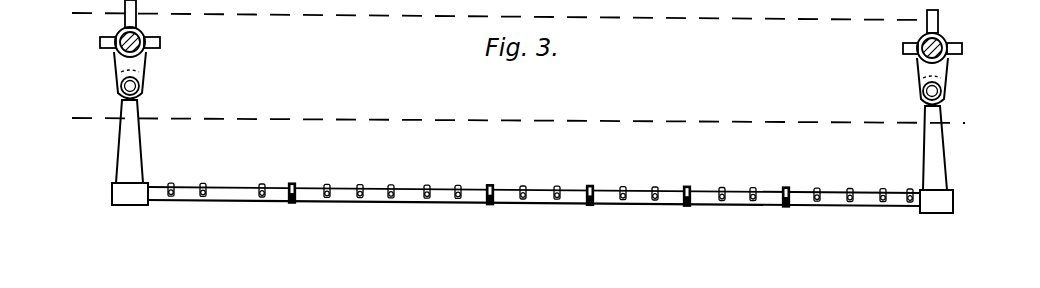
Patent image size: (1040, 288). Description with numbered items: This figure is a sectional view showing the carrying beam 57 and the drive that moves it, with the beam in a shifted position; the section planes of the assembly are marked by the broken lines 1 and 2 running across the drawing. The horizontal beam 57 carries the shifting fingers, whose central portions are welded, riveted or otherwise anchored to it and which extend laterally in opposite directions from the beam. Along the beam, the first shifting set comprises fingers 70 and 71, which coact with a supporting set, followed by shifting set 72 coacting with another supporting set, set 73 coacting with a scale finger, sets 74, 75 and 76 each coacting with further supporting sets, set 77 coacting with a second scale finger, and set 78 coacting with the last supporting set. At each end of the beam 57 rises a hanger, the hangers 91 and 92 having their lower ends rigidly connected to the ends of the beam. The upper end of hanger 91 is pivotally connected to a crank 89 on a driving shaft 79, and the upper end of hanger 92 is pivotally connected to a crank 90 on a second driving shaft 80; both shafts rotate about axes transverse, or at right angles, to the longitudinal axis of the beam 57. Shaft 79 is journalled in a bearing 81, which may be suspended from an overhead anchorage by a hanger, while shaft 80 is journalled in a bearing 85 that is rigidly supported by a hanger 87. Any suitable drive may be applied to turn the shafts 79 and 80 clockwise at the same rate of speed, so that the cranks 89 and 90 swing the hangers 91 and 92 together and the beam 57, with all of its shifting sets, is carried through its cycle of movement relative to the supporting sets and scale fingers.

The line 1— 1 is at (516, 120).
The line 2— 2 is at (517, 15).
The beam 57 is at (347, 203).
The shifting finger 70 is at (171, 200).
The shifting finger 71 is at (203, 200).
The shifting set 72 is at (292, 203).
The shifting set 73 is at (391, 201).
The shifting set 74 is at (490, 204).
The shifting set 75 is at (590, 205).
The shifting set 76 is at (687, 205).
The shifting set 77 is at (786, 206).
The shifting set 78 is at (883, 205).
The driving shaft 79 is at (121, 34).
The driving shaft 80 is at (945, 42).
The bearing 81 is at (118, 52).
The bearing 85 is at (903, 47).
The hanger 87 is at (937, 18).
The crank 89 is at (112, 67).
The crank 90 is at (928, 72).
The hanger 91 is at (128, 151).
The hanger 92 is at (936, 151).